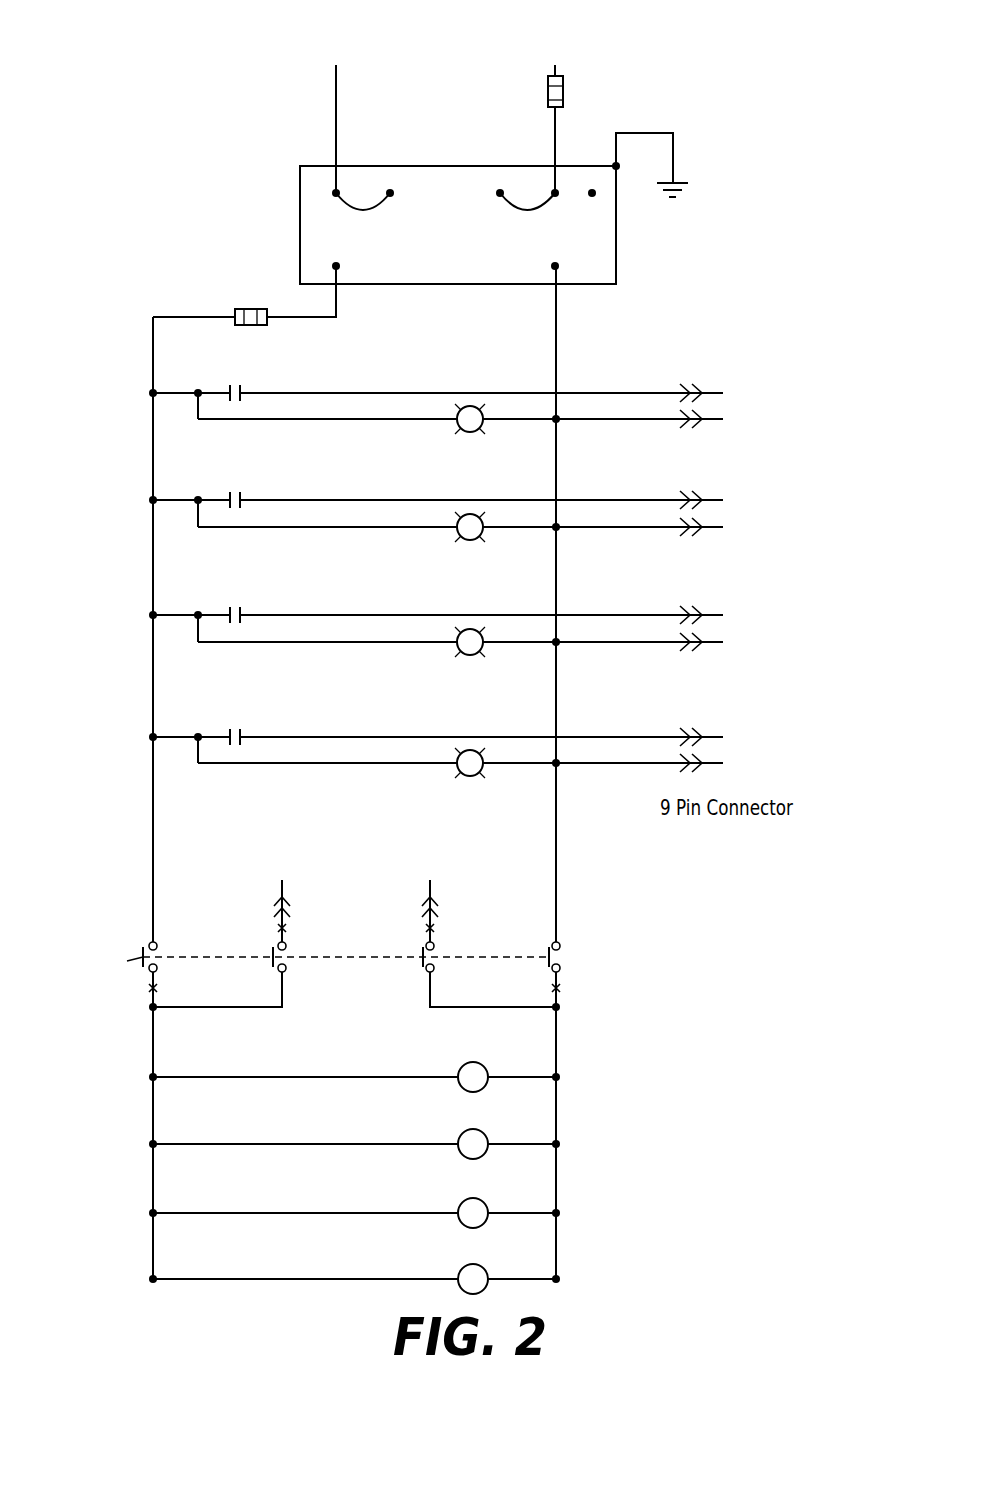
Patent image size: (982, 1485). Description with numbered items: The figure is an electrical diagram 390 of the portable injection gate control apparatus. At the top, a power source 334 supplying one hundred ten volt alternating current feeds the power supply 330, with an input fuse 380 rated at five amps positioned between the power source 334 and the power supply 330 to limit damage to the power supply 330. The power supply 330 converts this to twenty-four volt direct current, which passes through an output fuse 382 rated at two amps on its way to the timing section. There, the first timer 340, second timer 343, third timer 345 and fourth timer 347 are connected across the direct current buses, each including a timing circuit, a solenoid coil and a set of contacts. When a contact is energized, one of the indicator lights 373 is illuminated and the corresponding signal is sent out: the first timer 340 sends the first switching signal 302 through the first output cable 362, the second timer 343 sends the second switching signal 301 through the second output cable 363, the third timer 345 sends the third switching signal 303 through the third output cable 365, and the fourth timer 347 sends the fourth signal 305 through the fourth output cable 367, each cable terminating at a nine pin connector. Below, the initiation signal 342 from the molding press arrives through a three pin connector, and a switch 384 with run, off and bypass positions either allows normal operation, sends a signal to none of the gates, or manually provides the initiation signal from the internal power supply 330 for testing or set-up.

The power supply 330 is at (394, 228).
The power source 334 is at (514, 98).
The input fuse 380 is at (567, 104).
The electrical diagram 390 is at (495, 682).
The output fuse 382 is at (244, 312).
The first switching signal 302 is at (436, 365).
The second switching signal 301 is at (436, 474).
The third switching signal 303 is at (436, 588).
The fourth signal 305 is at (436, 711).
The indicator lights 373 is at (460, 593).
The first output cable 362 is at (751, 384).
The second output cable 363 is at (751, 493).
The third output cable 365 is at (751, 606).
The fourth output cable 367 is at (751, 733).
The switch 384 is at (287, 980).
The initiation signal 342 is at (427, 904).
The first timer 340 is at (354, 1062).
The second timer 343 is at (354, 1129).
The third timer 345 is at (354, 1198).
The fourth timer 347 is at (354, 1264).